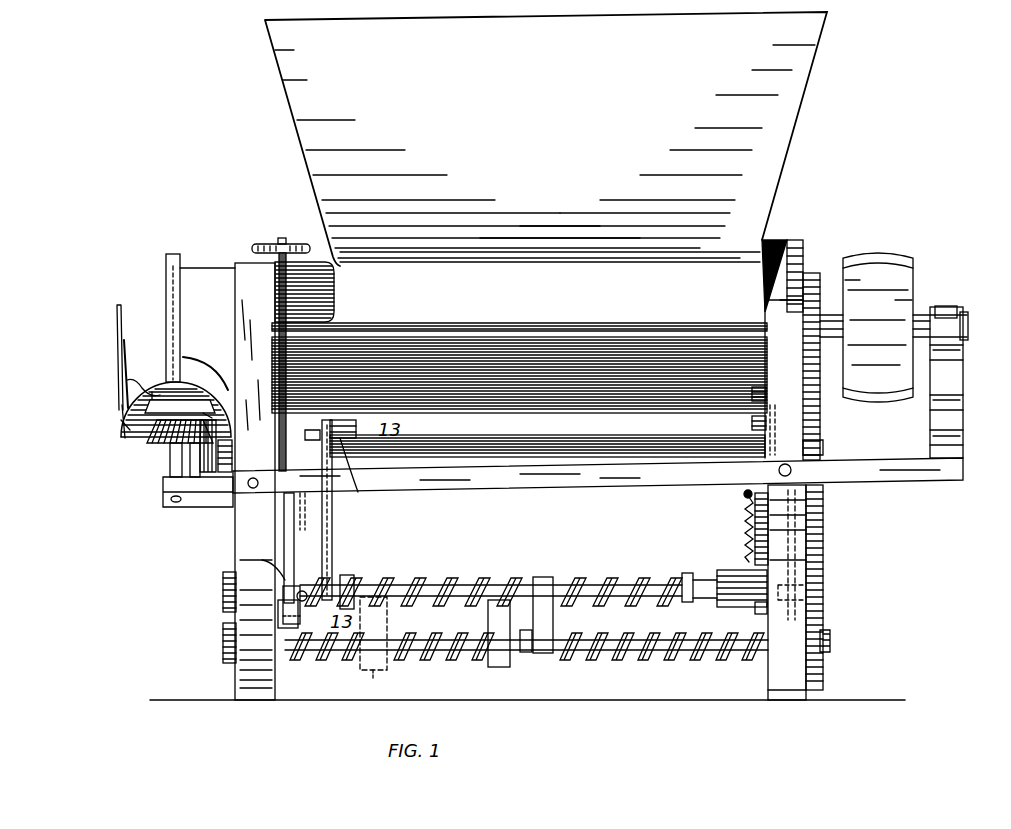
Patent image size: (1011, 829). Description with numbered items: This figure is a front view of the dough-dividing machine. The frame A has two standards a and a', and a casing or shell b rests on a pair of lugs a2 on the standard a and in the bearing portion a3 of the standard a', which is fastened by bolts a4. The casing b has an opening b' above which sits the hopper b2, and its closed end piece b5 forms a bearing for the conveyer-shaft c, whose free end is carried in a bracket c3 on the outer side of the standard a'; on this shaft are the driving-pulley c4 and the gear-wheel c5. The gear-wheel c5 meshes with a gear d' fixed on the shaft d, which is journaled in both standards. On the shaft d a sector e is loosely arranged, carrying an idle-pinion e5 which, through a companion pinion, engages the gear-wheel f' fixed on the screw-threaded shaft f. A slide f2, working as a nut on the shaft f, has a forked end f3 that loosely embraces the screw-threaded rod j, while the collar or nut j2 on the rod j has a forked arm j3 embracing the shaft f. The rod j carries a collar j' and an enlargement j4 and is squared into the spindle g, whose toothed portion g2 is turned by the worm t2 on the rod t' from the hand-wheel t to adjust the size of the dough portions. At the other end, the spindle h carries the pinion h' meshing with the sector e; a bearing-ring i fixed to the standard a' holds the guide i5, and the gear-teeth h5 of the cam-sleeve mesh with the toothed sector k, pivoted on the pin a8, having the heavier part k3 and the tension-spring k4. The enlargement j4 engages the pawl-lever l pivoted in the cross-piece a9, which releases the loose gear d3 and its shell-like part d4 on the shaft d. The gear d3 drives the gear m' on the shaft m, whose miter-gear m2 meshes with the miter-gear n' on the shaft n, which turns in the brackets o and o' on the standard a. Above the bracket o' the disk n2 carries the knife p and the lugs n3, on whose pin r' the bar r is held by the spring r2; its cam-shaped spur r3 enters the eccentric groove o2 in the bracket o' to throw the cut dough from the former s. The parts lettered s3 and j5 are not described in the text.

The hopper b2 is at (546, 139).
The end piece b5 is at (792, 245).
The hand-wheel t is at (281, 348).
The standard a is at (232, 481).
The knife or cutter p is at (166, 268).
The mold or former s is at (207, 294).
The curved guide s3 is at (205, 373).
The rod or bar r is at (109, 357).
The actuating-spring r2 is at (127, 360).
The pin r' is at (125, 381).
The cam-shaped spur r3 is at (125, 418).
The perforated lugs or ears n3 is at (120, 405).
The shaft n is at (176, 430).
The disk n2 is at (157, 392).
The upper bracket o' is at (180, 401).
The eccentric groove o2 is at (209, 404).
The miter-gear n' is at (170, 444).
The bracket o is at (179, 486).
The miter-gear m2 is at (207, 470).
The shaft m is at (218, 491).
The frame or support A is at (598, 491).
The casing or shell b is at (304, 292).
The lugs a2 is at (275, 357).
The opening b' is at (519, 388).
The shaft d is at (547, 438).
The loose gear d3 is at (336, 424).
The shell-like part d4 is at (356, 450).
The cross-piece a9 is at (320, 440).
The pawl-lever l is at (340, 530).
The gear m' is at (309, 511).
The rod t' is at (296, 548).
The worm t2 is at (300, 590).
The toothed wheel portion g2 is at (262, 560).
The short spindle or arbor g is at (222, 597).
The screw-threaded shaft or rod j is at (491, 583).
The screw collar j5 is at (349, 575).
The enlargement j4 is at (302, 600).
The collar or nut j2 is at (541, 577).
The forked arm j3 is at (556, 604).
The collar or projection j' is at (682, 571).
The bearing-ring i is at (720, 572).
The guide i5 is at (708, 598).
The gear-teeth h5 is at (750, 613).
The screw-threaded shaft f is at (570, 654).
The forked end f3 is at (488, 606).
The slide f2 is at (505, 677).
The gear-wheel f' is at (839, 654).
The standard a' is at (770, 592).
The short spindle or arbor h is at (831, 587).
The pinion h' is at (821, 585).
The pin a8 is at (806, 555).
The idle-pinion e5 is at (806, 527).
The toothed sector k is at (768, 520).
The sector e is at (810, 494).
The tension-spring k4 is at (745, 520).
The enlarged heavier part k3 is at (744, 494).
The bearing portion a3 is at (784, 379).
The bolts a4 is at (752, 425).
The gear d' is at (832, 441).
The gear-wheel c5 is at (812, 275).
The driving-pulley c4 is at (895, 262).
The conveyer-shaft c is at (968, 326).
The bracket c3 is at (960, 386).